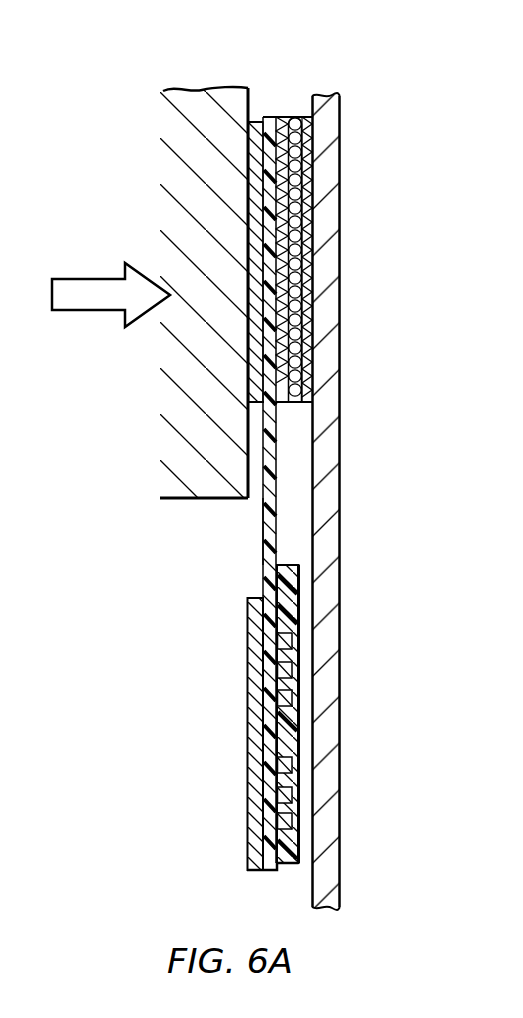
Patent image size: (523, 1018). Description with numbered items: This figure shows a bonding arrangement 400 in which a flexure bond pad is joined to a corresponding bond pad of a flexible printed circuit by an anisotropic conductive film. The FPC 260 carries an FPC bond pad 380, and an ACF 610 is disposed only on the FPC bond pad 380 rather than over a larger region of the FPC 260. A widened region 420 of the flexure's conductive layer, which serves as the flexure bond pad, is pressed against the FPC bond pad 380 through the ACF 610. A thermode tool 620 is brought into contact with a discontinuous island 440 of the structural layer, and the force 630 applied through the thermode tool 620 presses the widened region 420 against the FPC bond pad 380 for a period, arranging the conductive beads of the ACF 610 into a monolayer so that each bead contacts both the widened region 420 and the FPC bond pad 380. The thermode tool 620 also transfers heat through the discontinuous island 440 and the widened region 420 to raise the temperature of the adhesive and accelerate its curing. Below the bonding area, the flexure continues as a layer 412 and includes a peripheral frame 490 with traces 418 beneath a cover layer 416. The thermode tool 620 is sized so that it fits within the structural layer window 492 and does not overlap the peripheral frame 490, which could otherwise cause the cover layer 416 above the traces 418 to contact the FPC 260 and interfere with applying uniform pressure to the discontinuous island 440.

The display device assembly 400 is at (263, 58).
The anisotropic conductive film 610 is at (295, 117).
The discontinuous island 440 is at (258, 152).
The FPC bond pad 380 is at (307, 176).
The force 630 is at (87, 278).
The thermode tool 620 is at (190, 408).
The widened region 420 is at (283, 405).
The flexible circuit film 412 is at (270, 459).
The structural layer window 492 is at (253, 499).
The peripheral frame 490 is at (258, 700).
The FPC 260 is at (330, 674).
The traces 418 is at (290, 798).
The cover layer 416 is at (290, 862).